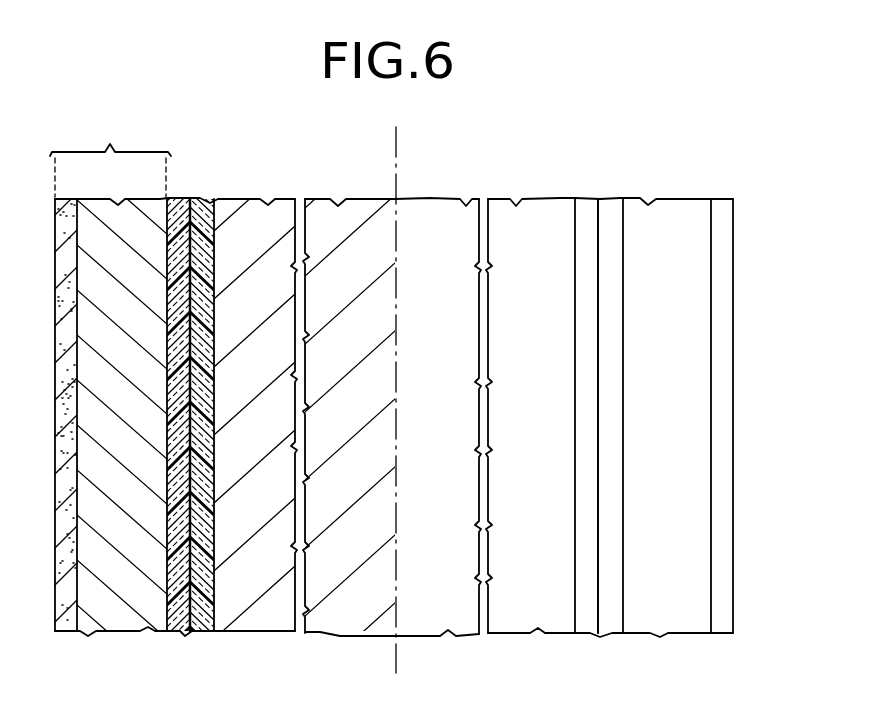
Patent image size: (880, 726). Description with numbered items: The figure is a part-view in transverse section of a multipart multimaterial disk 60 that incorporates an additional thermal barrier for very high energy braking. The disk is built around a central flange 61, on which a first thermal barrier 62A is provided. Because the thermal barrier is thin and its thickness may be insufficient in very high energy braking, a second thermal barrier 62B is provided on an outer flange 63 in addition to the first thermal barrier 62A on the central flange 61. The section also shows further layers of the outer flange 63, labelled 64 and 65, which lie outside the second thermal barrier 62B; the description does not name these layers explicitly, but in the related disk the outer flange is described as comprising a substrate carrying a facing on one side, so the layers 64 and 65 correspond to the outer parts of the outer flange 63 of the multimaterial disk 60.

The multimaterial disk 60 is at (590, 190).
The central flange 61 is at (326, 612).
The first thermal barrier 62A is at (200, 612).
The second thermal barrier 62B is at (175, 617).
The outer flange 63 is at (110, 151).
The protective layer 64 is at (110, 605).
The lubricant layer 65 is at (65, 615).